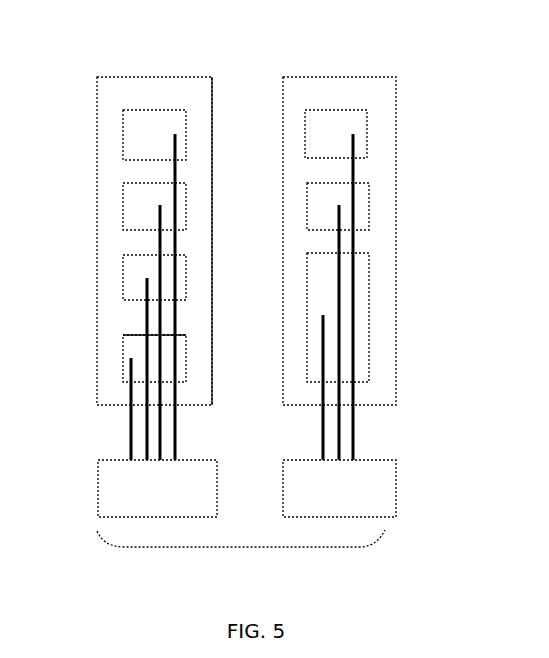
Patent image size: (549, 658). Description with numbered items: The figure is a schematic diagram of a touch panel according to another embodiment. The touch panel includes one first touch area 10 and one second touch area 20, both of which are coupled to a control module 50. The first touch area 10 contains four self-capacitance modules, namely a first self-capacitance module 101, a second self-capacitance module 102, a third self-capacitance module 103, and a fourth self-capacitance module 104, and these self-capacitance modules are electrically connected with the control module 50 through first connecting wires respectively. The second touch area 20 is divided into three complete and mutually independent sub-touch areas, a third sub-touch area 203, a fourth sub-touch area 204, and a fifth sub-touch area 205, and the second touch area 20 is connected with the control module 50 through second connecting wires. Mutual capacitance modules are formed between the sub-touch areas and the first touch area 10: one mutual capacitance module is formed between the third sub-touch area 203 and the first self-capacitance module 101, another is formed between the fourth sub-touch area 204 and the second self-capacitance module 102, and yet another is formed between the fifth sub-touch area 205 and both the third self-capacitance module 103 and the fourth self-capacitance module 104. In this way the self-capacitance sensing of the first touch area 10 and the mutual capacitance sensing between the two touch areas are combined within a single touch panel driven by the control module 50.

The first touch area 10 is at (172, 92).
The second touch area 20 is at (333, 92).
The first self-capacitance module 101 is at (144, 145).
The second self-capacitance module 102 is at (140, 208).
The third self-capacitance module 103 is at (137, 279).
The fourth self-capacitance module 104 is at (137, 353).
The third sub-touch area 203 is at (367, 136).
The fourth sub-touch area 204 is at (369, 208).
The fifth sub-touch area 205 is at (369, 316).
The control module 50 is at (241, 547).